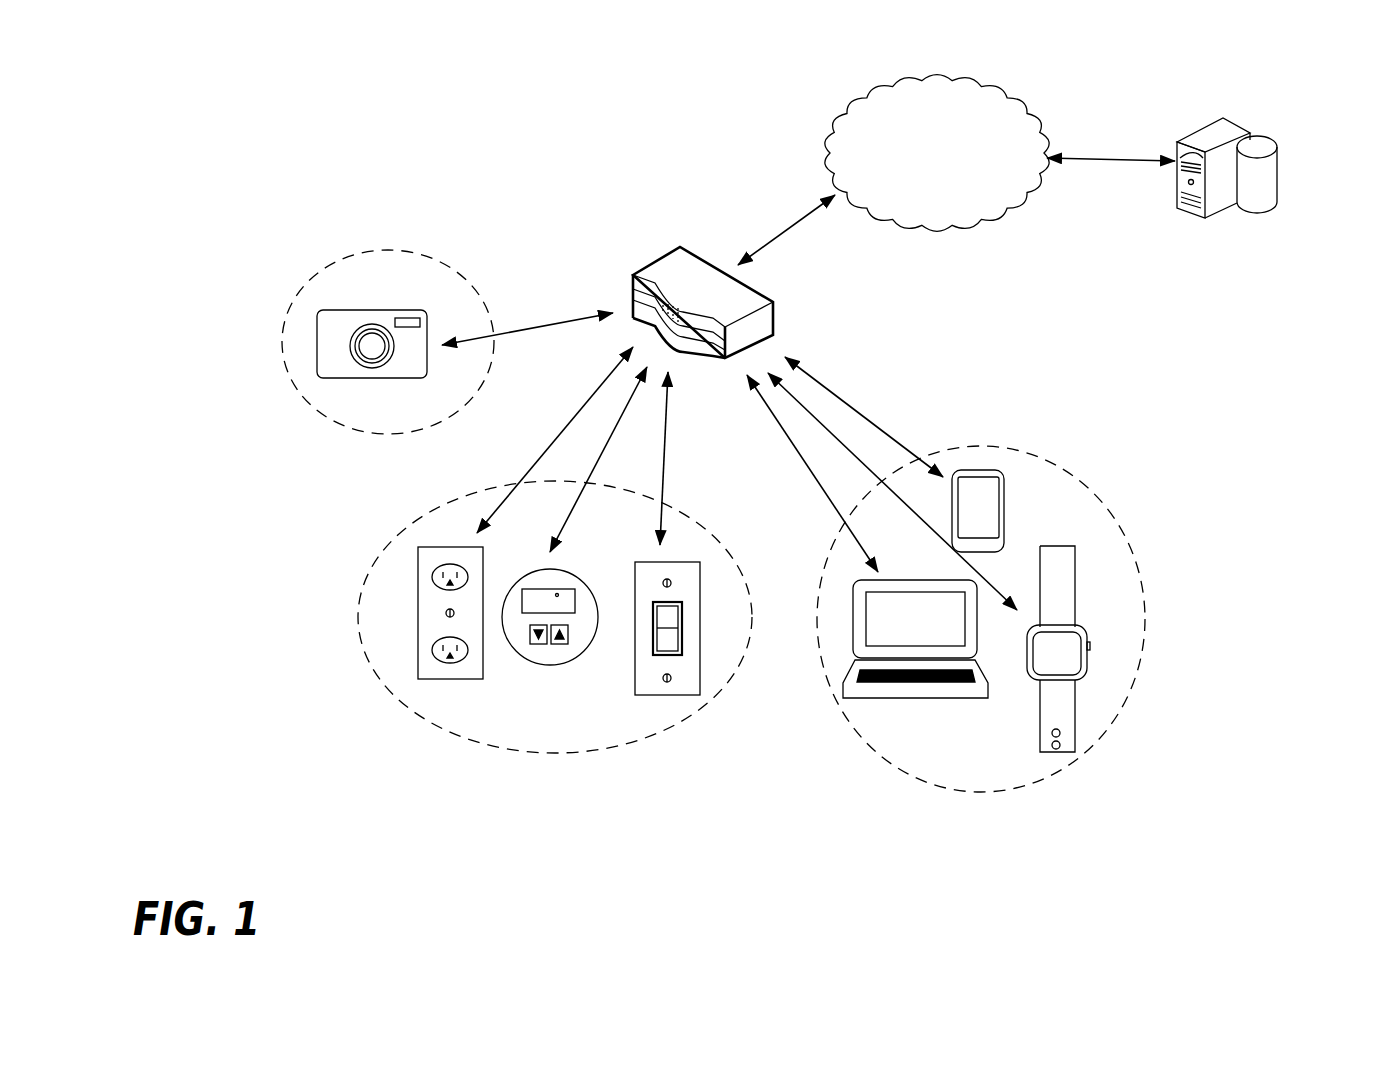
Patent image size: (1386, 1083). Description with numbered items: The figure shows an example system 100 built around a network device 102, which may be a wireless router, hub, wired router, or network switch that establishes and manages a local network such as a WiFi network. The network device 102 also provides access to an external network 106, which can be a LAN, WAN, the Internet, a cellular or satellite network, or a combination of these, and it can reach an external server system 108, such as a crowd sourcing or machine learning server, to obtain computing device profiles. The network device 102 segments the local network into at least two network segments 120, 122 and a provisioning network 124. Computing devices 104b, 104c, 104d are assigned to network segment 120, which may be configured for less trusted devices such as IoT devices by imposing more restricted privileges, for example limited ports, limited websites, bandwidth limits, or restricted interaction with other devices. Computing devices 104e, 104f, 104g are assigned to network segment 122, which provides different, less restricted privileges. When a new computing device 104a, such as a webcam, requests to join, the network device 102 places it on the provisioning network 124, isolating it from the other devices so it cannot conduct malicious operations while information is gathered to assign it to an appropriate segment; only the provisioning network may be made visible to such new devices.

The system 100 is at (483, 95).
The network device 102 is at (672, 253).
The external network 106 is at (954, 200).
The external server system 108 is at (1288, 132).
The provisioning network 124 is at (300, 291).
The new computing device 104a is at (337, 378).
The network segment 120 is at (358, 605).
The computing device 104b is at (418, 643).
The computing device 104c is at (532, 663).
The computing device 104d is at (700, 590).
The network segment 122 is at (1142, 596).
The computing device 104e is at (866, 698).
The computing device 104f is at (1004, 482).
The computing device 104g is at (1088, 663).